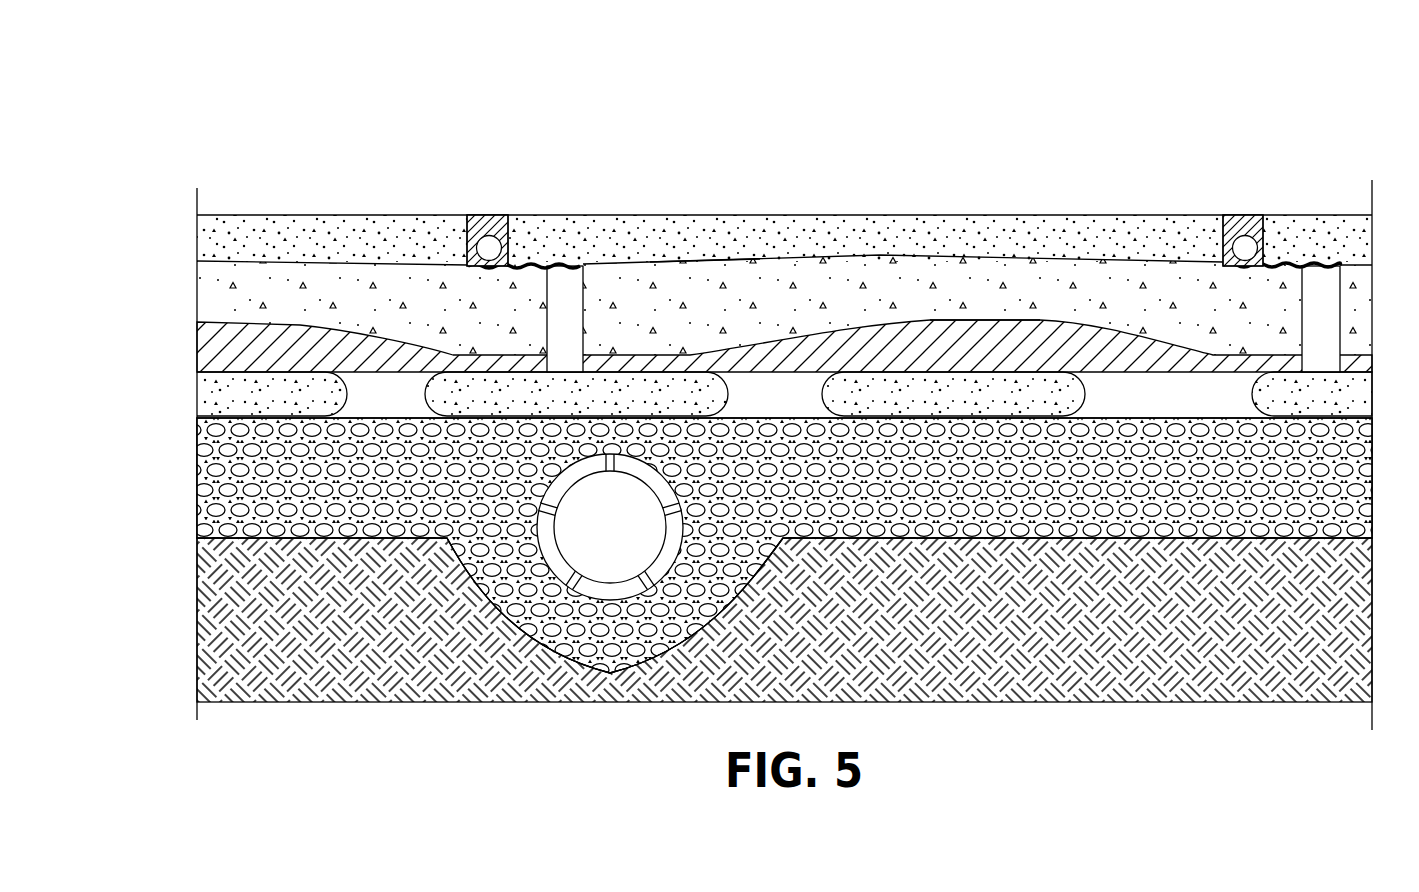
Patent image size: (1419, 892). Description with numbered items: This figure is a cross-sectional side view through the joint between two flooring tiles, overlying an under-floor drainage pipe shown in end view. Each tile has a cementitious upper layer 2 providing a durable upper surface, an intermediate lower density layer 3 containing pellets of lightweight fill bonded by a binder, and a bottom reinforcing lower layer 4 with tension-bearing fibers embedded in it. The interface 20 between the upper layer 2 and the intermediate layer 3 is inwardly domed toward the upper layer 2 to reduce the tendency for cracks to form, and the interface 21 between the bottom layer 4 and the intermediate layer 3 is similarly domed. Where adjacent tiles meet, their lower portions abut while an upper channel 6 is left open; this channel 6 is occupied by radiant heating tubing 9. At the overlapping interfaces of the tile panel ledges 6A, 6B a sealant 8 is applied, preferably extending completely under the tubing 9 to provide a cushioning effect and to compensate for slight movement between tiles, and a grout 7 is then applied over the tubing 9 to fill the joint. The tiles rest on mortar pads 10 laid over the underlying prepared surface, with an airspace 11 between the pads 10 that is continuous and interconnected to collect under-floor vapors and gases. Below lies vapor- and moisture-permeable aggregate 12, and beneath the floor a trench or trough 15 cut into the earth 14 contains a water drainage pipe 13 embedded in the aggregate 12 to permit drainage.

The cementitious upper layer 2 is at (818, 228).
The intermediate lower density layer 3 is at (880, 293).
The bottom reinforcing lower layer 4 is at (973, 357).
The upper channel 6 is at (478, 236).
The tile panel ledge 6A is at (425, 211).
The tile panel ledge 6B is at (523, 267).
The grout 7 is at (503, 224).
The flexible caulk / sealant 8 is at (560, 263).
The radiant heating tubing 9 is at (489, 248).
The mortar pad 10 is at (263, 406).
The airspace 11 is at (363, 406).
The aggregate 12 is at (291, 476).
The water drainage pipe 13 is at (593, 540).
The earth 14 is at (321, 634).
The trench or trough 15 is at (745, 612).
The interface between first and second layers 20 is at (712, 260).
The interface between bottom and intermediate layers 21 is at (930, 320).